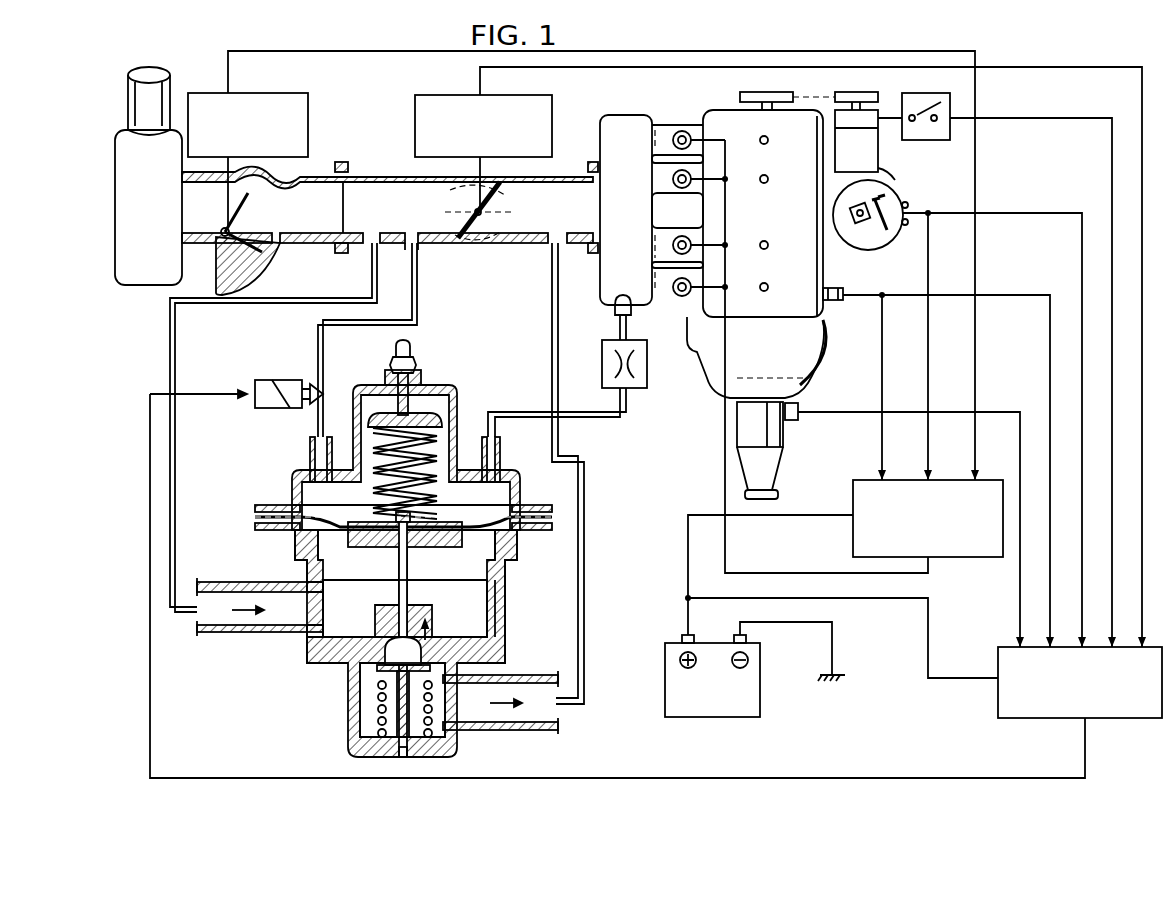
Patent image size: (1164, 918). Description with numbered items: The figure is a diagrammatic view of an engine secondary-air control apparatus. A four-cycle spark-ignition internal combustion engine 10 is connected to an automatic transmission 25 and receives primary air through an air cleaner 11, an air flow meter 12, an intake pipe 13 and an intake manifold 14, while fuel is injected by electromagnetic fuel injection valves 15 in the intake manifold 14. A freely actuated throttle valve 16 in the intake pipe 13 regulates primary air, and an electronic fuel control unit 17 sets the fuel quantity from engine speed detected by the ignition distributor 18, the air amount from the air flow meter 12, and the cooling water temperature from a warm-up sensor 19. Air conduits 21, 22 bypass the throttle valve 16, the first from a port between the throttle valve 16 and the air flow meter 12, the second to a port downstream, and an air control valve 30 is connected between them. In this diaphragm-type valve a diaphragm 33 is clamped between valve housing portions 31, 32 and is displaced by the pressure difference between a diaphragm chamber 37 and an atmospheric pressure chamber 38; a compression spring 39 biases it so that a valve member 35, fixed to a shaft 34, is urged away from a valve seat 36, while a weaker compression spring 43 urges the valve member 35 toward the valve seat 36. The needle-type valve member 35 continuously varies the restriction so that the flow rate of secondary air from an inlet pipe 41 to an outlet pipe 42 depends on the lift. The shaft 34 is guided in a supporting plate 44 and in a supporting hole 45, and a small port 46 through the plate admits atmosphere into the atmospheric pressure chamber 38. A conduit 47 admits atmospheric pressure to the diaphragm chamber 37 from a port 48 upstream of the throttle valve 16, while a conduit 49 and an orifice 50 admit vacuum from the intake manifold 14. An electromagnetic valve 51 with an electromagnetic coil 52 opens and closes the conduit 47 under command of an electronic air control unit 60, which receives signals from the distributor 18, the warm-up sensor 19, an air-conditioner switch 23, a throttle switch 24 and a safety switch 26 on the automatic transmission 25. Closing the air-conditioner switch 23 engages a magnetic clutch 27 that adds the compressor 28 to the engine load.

The internal combustion engine 10 is at (730, 110).
The air cleaner 11 is at (165, 288).
The air flow meter 12 is at (308, 118).
The intake pipe 13 is at (384, 172).
The intake manifold 14 is at (647, 114).
The electromagnetic fuel injection valves 15 is at (682, 130).
The throttle valve 16 is at (480, 238).
The electronic fuel control unit 17 is at (955, 557).
The ignition distributor 18 is at (895, 230).
The warm-up sensor 19 is at (835, 288).
The air conduit 21 is at (175, 480).
The air conduit 22 is at (552, 360).
The air-conditioner switch 23 is at (930, 140).
The throttle switch 24 is at (552, 125).
The automatic transmission 25 is at (797, 382).
The safety switch 26 is at (794, 420).
The magnetic clutch 27 is at (878, 122).
The compressor 28 is at (901, 183).
The air control valve 30 is at (300, 652).
The valve housing portion 31 is at (292, 496).
The valve housing portion 32 is at (295, 548).
The diaphragm 33 is at (342, 520).
The shaft 34 is at (395, 610).
The valve member 35 is at (455, 670).
The valve seat 36 is at (385, 660).
The diaphragm chamber 37 is at (505, 500).
The atmospheric pressure chamber 38 is at (505, 555).
The compression spring 39 is at (437, 440).
The inlet pipe 41 is at (230, 632).
The outlet pipe 42 is at (502, 730).
The compression spring 43 is at (378, 695).
The supporting plate 44 is at (348, 535).
The supporting hole 45 is at (400, 757).
The port 46 is at (500, 595).
The conduit 47 is at (417, 298).
The port 48 is at (415, 246).
The conduit 49 is at (518, 412).
The orifice 50 is at (602, 372).
The electromagnetic valve 51 is at (312, 382).
The electromagnetic coil 52 is at (270, 408).
The electronic air control unit 60 is at (1060, 718).